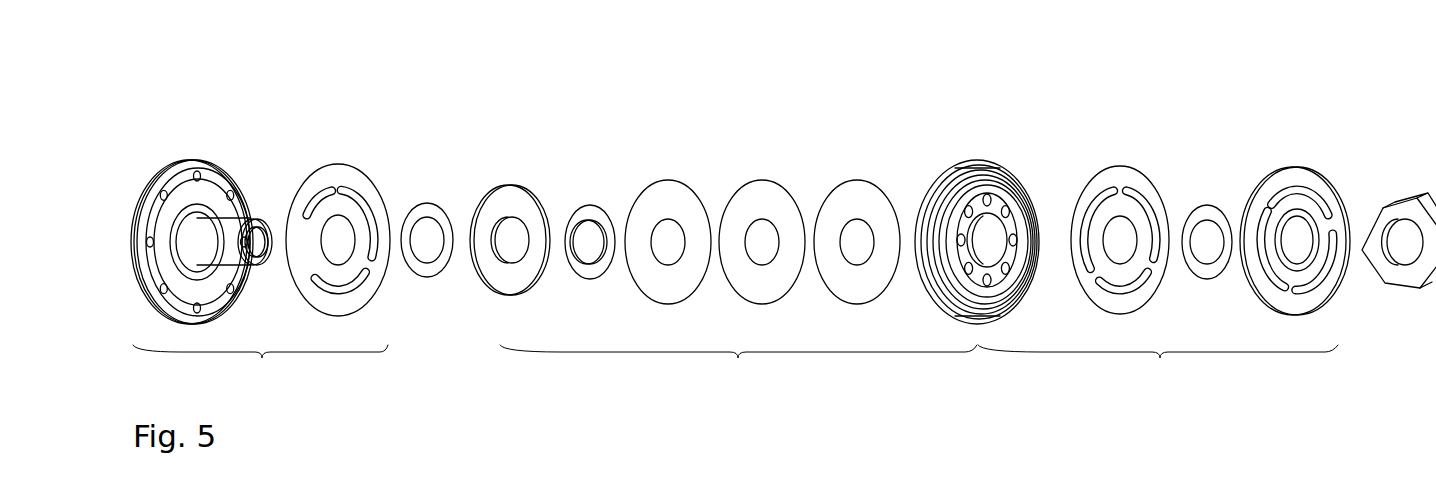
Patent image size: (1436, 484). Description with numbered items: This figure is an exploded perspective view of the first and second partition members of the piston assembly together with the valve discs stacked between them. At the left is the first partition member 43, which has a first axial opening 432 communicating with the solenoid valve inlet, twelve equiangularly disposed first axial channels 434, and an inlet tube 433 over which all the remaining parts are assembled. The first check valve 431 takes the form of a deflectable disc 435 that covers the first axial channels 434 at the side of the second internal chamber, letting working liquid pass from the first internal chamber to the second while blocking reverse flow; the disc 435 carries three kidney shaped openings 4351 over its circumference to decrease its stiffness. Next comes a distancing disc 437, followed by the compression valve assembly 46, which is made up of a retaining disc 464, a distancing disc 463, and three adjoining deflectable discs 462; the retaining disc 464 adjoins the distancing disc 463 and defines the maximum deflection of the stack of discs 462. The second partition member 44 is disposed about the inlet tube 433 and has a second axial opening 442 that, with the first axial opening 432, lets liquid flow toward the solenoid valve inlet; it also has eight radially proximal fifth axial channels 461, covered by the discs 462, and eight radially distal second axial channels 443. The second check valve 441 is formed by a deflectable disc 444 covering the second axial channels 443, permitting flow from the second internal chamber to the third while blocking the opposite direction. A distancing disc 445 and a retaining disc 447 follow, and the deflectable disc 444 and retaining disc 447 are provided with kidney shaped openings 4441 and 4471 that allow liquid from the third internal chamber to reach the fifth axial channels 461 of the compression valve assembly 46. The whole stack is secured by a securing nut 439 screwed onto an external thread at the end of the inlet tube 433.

The first check valve 431 is at (260, 369).
The first partition member 43 is at (215, 200).
The first axial channels 434 is at (196, 158).
The inlet tube 433 is at (222, 228).
The first axial opening 432 is at (258, 232).
The deflectable disc 435 is at (338, 173).
The kidney shaped openings 4351 is at (368, 220).
The distancing disc 437 is at (425, 207).
The compression valve assembly 46 is at (738, 369).
The retaining disc 464 is at (507, 203).
The distancing disc 463 is at (578, 212).
The deflectable discs 462 is at (670, 187).
The second partition member 44 is at (942, 173).
The second axial channels 443 is at (992, 167).
The fifth axial channels 461 is at (1029, 187).
The second axial opening 442 is at (1035, 195).
The second check valve 441 is at (1158, 369).
The deflectable disc 444 is at (1097, 190).
The kidney shaped openings 4441 is at (1135, 195).
The distancing disc 445 is at (1193, 213).
The retaining disc 447 is at (1265, 197).
The kidney shaped openings 4471 is at (1302, 187).
The securing nut 439 is at (1370, 215).